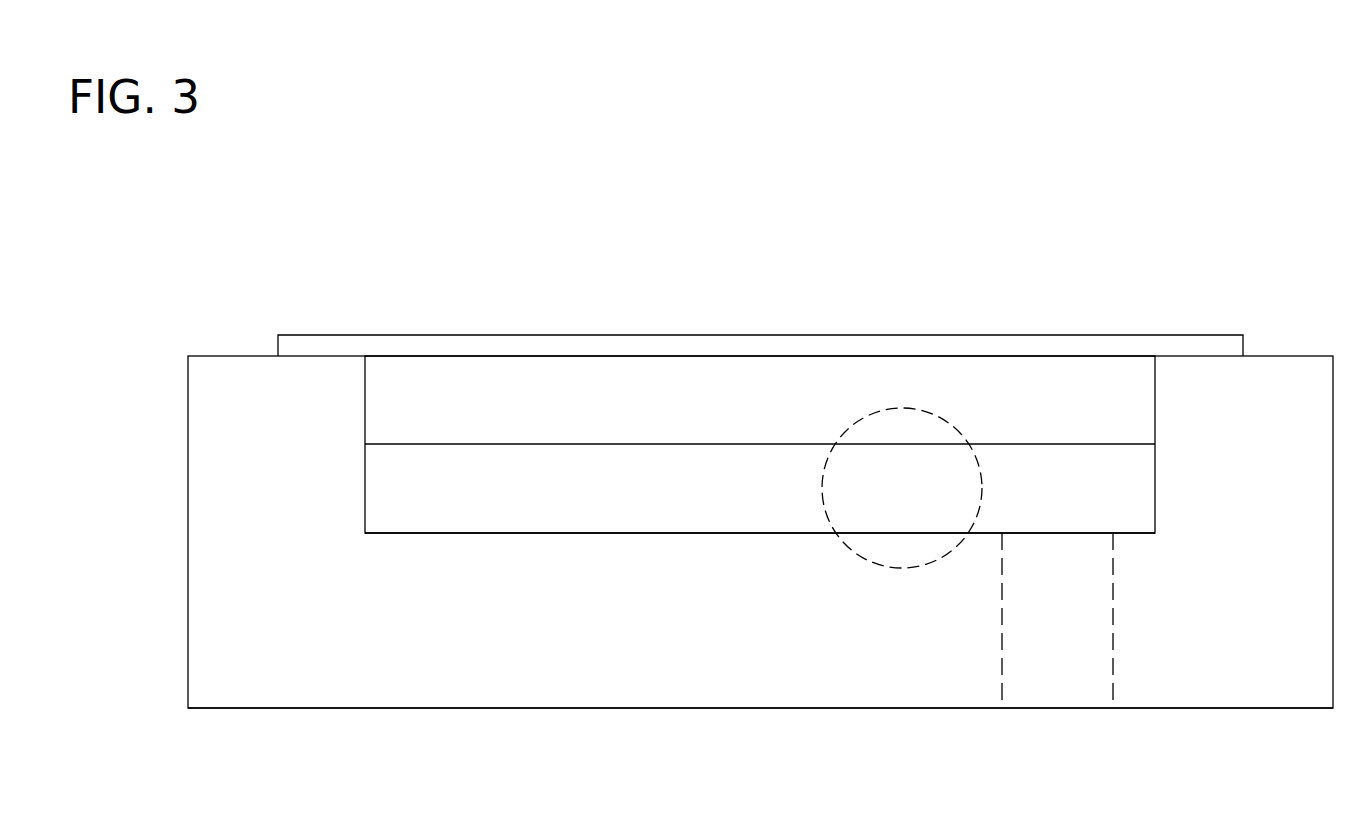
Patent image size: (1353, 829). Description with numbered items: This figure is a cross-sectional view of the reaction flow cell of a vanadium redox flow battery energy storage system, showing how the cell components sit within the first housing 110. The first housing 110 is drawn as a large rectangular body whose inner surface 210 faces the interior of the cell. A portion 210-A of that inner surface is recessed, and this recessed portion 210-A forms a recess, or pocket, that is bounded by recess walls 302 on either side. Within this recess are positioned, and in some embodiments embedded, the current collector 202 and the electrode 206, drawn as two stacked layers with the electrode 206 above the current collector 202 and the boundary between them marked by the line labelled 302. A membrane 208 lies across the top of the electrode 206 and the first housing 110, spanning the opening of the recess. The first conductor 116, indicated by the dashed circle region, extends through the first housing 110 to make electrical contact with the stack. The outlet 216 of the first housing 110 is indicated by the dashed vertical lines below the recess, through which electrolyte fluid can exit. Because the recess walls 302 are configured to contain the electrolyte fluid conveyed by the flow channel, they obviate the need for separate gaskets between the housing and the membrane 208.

The first housing 110 is at (407, 667).
The first conductor 116 is at (848, 543).
The current collector 202 is at (551, 503).
The electrode 206 is at (551, 415).
The membrane 208 is at (428, 335).
The inner surface 210 is at (219, 354).
The recessed portion of inner surface 210-A is at (621, 535).
The outlet 216 is at (1113, 630).
The recess walls 302 is at (364, 443).